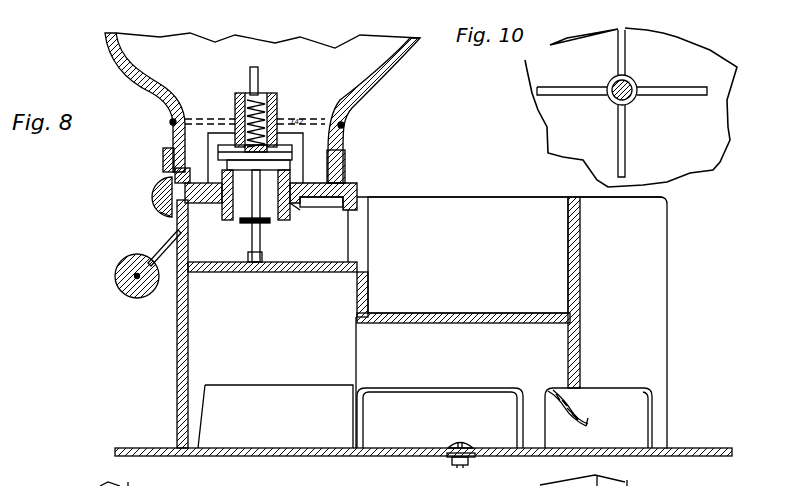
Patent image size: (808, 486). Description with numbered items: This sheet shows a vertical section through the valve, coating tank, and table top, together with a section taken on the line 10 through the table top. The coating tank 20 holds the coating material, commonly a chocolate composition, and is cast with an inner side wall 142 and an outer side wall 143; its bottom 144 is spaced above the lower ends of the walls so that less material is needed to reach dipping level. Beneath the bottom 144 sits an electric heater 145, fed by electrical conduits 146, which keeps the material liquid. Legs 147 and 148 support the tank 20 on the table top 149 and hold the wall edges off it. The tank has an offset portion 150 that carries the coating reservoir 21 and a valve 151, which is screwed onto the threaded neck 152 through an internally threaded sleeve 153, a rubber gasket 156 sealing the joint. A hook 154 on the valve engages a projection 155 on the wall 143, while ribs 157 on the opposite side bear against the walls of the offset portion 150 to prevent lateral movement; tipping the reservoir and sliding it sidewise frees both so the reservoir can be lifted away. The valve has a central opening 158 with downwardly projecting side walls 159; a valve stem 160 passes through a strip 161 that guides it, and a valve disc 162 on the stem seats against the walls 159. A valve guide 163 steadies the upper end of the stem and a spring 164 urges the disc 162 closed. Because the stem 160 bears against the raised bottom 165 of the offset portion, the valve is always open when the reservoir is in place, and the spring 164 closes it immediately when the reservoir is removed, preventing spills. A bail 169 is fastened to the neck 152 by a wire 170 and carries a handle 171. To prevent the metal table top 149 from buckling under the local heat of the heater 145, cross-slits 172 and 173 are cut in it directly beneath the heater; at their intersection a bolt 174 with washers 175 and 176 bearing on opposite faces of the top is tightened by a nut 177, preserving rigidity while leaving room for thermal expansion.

In FIG. 8, the section line 10 is at (412, 427).
In FIG. 8, the coating tank 20 is at (462, 257).
In FIG. 8, the coating reservoir 21 is at (412, 58).
In FIG. 8, the inner side wall 142 is at (658, 258).
In FIG. 8, the outer side wall 143 is at (178, 312).
In FIG. 8, the bottom 144 is at (405, 313).
In FIG. 8, the electric heater 145 is at (548, 358).
In FIG. 8, the electrical conduits 146 is at (576, 413).
In FIG. 8, the leg 147 is at (662, 412).
In FIG. 8, the leg 148 is at (190, 405).
In FIG. 8, the table top 149 is at (702, 449).
In FIG. 8, the offset portion 150 is at (358, 205).
In FIG. 8, the valve 151 is at (345, 182).
In FIG. 8, the threaded neck 152 is at (345, 140).
In FIG. 8, the internally threaded sleeve 153 is at (163, 153).
In FIG. 8, the hook 154 is at (155, 195).
In FIG. 8, the projection 155 is at (165, 217).
In FIG. 8, the rubber gasket 156 is at (176, 180).
In FIG. 8, the ribs 157 is at (320, 204).
In FIG. 8, the opening 158 is at (283, 210).
In FIG. 8, the side walls 159 is at (303, 206).
In FIG. 8, the valve stem 160 is at (254, 266).
In FIG. 8, the strip 161 is at (248, 223).
In FIG. 8, the valve disc 162 is at (232, 150).
In FIG. 8, the valve guide 163 is at (278, 106).
In FIG. 8, the spring 164 is at (246, 100).
In FIG. 8, the bottom 165 is at (312, 274).
In FIG. 8, the bail 169 is at (160, 240).
In FIG. 8, the wire 170 is at (170, 122).
In FIG. 8, the handle 171 is at (115, 276).
In FIG. 10, the cross-slit 172 is at (700, 90).
In FIG. 10, the cross-slit 173 is at (625, 45).
In FIG. 8, the bolt 174 is at (460, 440).
In FIG. 10, the bolt 174 is at (628, 82).
In FIG. 8, the washer 175 is at (452, 446).
In FIG. 8, the washer 176 is at (446, 456).
In FIG. 8, the nut 177 is at (464, 464).